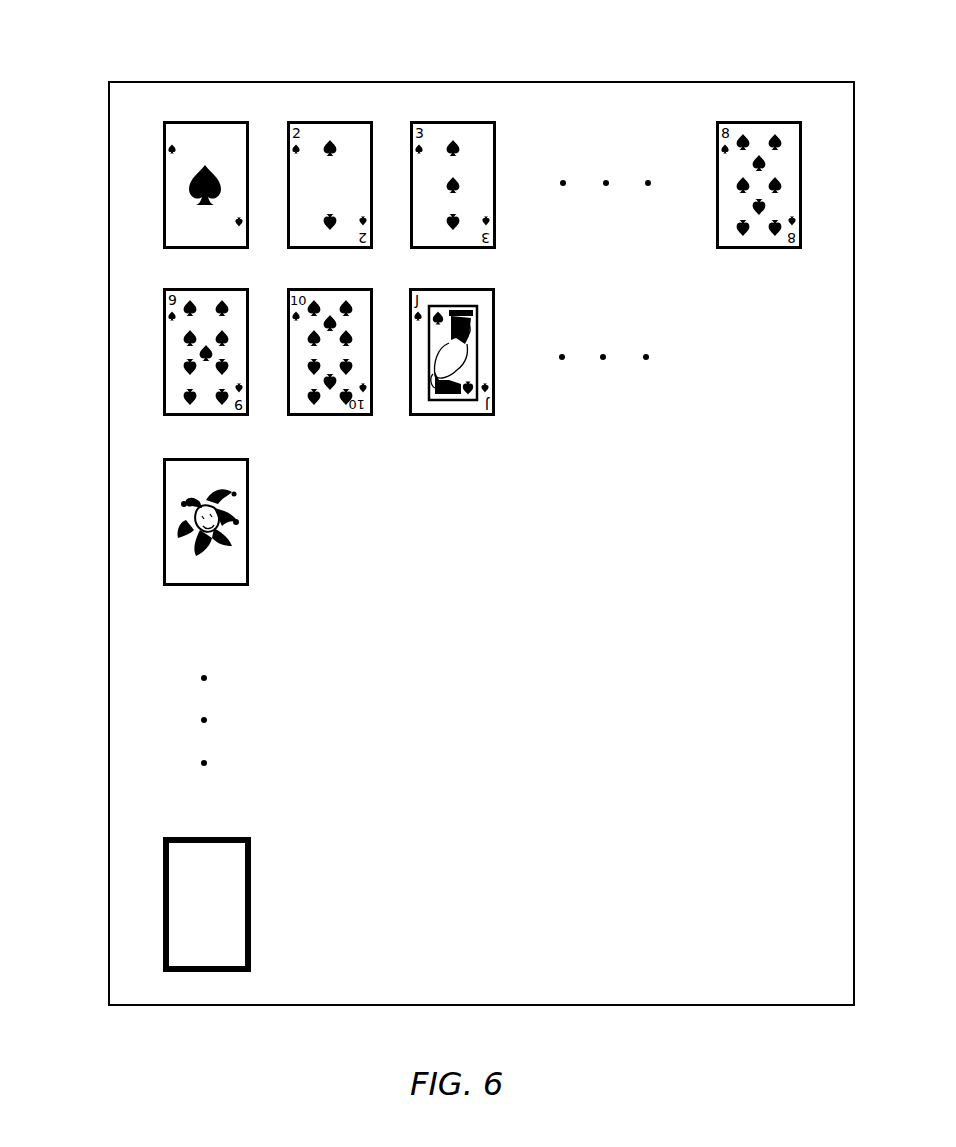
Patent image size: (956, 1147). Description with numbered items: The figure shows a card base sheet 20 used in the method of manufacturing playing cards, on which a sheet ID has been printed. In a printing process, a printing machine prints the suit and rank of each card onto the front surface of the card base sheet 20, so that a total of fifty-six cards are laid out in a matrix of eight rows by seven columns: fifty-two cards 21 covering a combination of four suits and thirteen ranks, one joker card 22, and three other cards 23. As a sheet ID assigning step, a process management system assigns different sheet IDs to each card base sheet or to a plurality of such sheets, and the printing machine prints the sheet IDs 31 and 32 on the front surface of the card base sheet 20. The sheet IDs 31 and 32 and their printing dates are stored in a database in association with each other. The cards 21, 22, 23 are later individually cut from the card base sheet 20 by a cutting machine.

The card base sheet 20 is at (720, 84).
The card 21 is at (145, 190).
The joker card 22 is at (163, 485).
The other card 23 is at (163, 877).
The sheet ID 31 is at (165, 232).
The sheet ID 32 is at (168, 572).